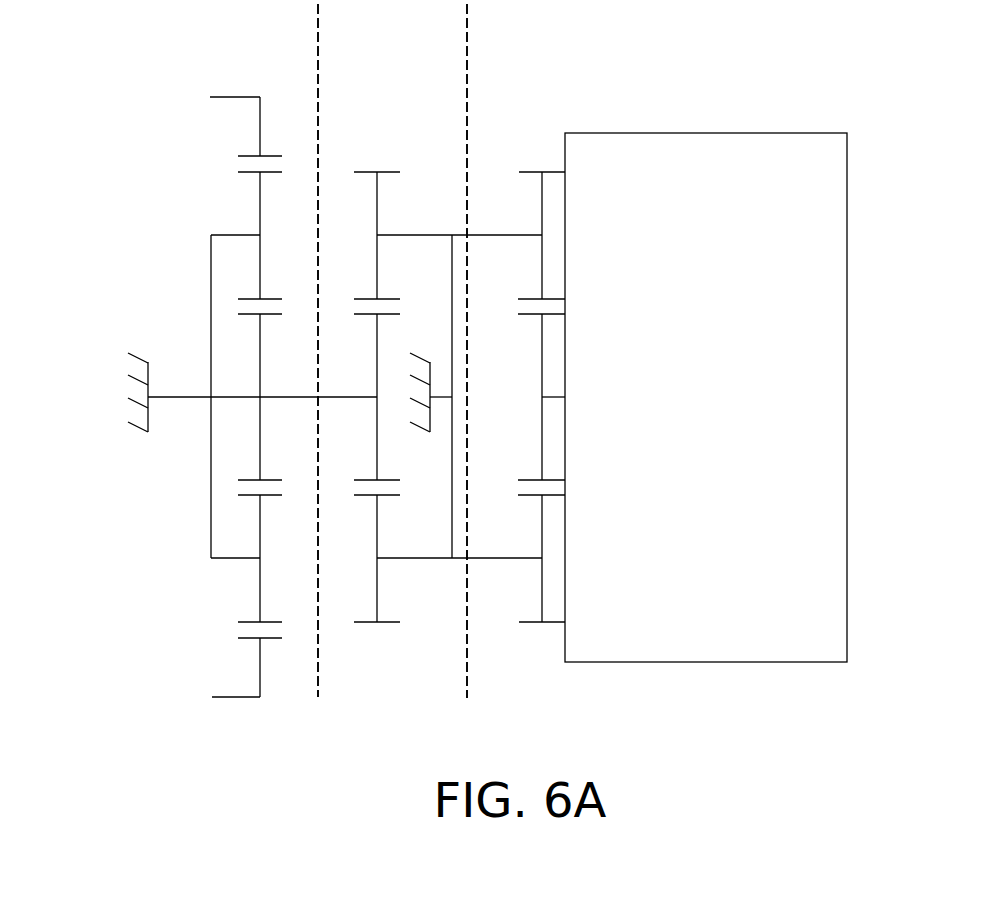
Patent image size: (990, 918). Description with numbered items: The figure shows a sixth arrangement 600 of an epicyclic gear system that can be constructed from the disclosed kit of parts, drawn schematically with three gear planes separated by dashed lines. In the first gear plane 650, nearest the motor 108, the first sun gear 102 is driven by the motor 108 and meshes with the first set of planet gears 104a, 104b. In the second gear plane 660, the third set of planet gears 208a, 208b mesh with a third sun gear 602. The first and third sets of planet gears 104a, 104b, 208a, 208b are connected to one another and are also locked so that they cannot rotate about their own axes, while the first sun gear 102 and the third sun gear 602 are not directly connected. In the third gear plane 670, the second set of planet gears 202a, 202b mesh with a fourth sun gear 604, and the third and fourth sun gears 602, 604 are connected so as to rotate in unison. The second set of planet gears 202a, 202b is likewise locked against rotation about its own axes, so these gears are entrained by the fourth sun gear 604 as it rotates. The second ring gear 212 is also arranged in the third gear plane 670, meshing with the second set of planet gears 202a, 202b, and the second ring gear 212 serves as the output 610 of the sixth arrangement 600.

The sixth arrangement 600 is at (861, 93).
The output 610 is at (200, 94).
The third gear plane 670 is at (270, 350).
The second gear plane 660 is at (392, 351).
The first gear plane 650 is at (514, 351).
The second ring gear 212 is at (236, 97).
The second set of planet gears 202a is at (260, 203).
The second set of planet gears 202b is at (260, 600).
The fourth sun gear 604 is at (260, 360).
The third sun gear 602 is at (377, 418).
The third set of planet gears 208a is at (384, 172).
The third set of planet gears 208b is at (387, 624).
The first sun gear 102 is at (542, 340).
The first set of planet gears 104a is at (533, 172).
The first set of planet gears 104b is at (533, 624).
The motor 108 is at (848, 397).